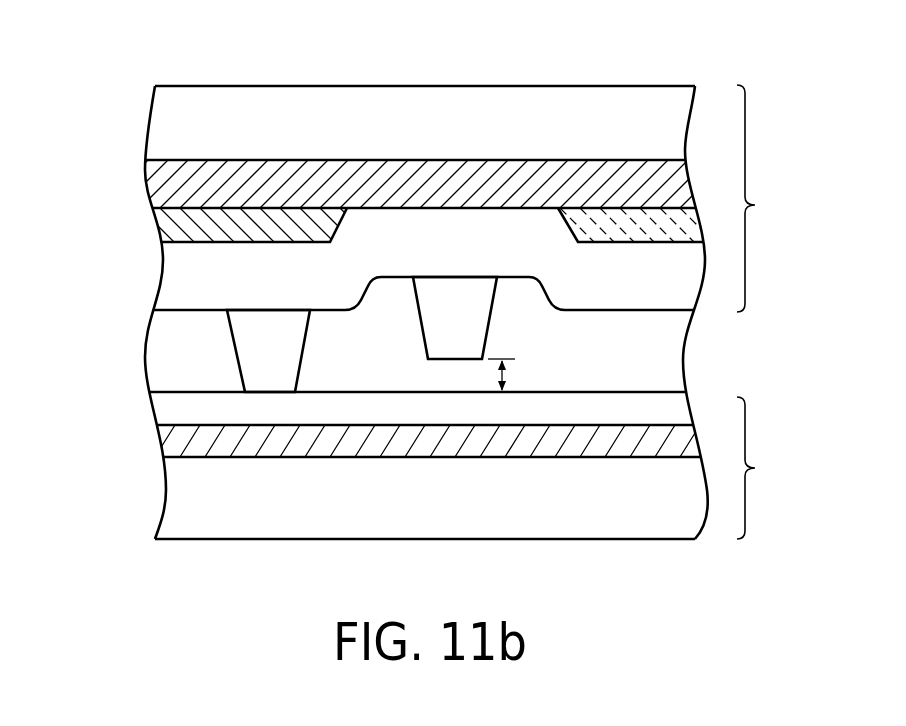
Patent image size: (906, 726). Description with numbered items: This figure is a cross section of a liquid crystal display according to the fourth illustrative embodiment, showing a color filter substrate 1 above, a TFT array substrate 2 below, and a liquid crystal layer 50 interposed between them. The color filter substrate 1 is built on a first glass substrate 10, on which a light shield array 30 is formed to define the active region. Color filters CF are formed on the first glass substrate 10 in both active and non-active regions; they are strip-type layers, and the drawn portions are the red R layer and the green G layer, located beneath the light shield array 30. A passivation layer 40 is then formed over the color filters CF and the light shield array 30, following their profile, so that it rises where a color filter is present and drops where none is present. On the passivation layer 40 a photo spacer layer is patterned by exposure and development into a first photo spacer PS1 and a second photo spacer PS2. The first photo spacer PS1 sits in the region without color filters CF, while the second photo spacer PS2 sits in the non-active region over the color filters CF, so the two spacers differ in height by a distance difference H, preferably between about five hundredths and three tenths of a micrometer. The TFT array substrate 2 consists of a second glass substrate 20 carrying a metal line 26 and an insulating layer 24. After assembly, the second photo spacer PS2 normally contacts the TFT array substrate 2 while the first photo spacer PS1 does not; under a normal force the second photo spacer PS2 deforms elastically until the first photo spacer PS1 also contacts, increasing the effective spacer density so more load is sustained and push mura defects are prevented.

The first glass substrate 10 is at (167, 118).
The light shield array 30 is at (163, 183).
The color filter CF is at (157, 227).
The red color layer R is at (220, 227).
The green color layer G is at (617, 227).
The passivation layer 40 is at (167, 288).
The liquid crystal layer 50 is at (167, 355).
The first photo spacer PS1 is at (453, 340).
The second photo spacer PS2 is at (252, 372).
The distance difference H is at (514, 375).
The insulating layer 24 is at (177, 412).
The metal line 26 is at (175, 447).
The second glass substrate 20 is at (177, 503).
The color filter substrate 1 is at (761, 198).
The TFT array substrate 2 is at (761, 468).